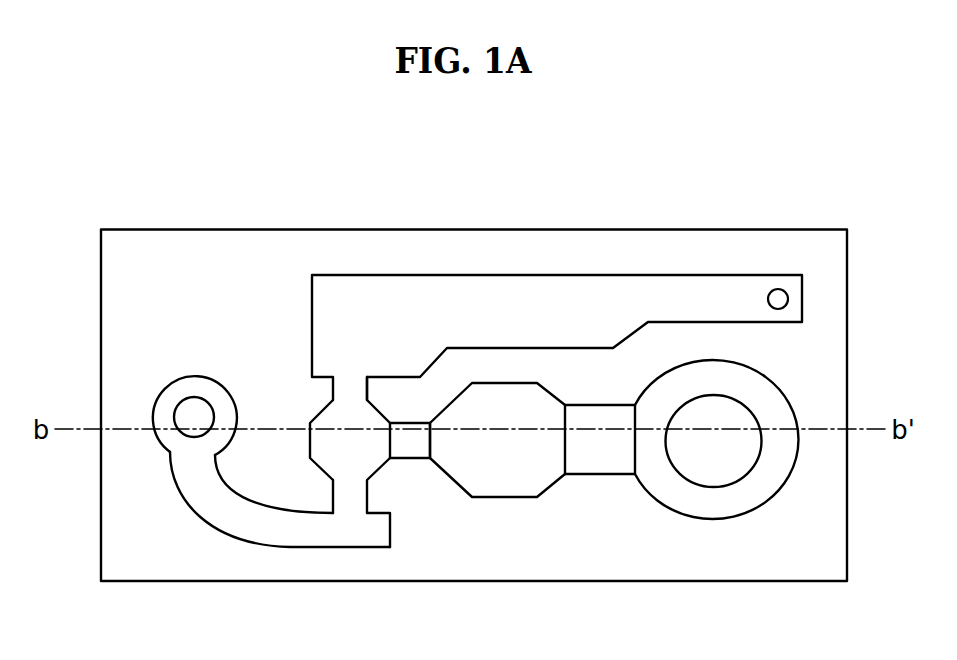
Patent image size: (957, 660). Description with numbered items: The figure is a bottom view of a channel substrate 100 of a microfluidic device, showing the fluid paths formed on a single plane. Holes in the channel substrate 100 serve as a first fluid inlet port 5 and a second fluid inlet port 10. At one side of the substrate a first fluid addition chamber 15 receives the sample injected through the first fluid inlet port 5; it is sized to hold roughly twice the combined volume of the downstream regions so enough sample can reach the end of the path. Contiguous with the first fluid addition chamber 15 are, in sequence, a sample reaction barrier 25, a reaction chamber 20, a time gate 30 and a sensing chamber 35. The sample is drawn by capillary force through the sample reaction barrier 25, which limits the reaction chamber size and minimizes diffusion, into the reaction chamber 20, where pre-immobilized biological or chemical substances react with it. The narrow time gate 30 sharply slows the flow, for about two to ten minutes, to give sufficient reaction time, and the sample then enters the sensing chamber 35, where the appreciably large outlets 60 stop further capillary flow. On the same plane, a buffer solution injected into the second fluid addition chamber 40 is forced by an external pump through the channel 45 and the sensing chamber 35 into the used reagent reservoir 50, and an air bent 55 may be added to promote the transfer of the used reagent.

The channel substrate 100 is at (442, 248).
The used reagent reservoir 50 is at (685, 293).
The air bent 55 is at (779, 289).
The outlets 60 is at (345, 389).
The sensing chamber 35 is at (351, 460).
The time gate 30 is at (412, 438).
The reaction chamber 20 is at (503, 487).
The sample reaction barrier 25 is at (600, 463).
The first fluid addition chamber 15 is at (767, 480).
The first fluid inlet port 5 is at (702, 468).
The second fluid addition chamber 40 is at (162, 405).
The second fluid inlet port 10 is at (190, 417).
The channel 45 is at (260, 523).